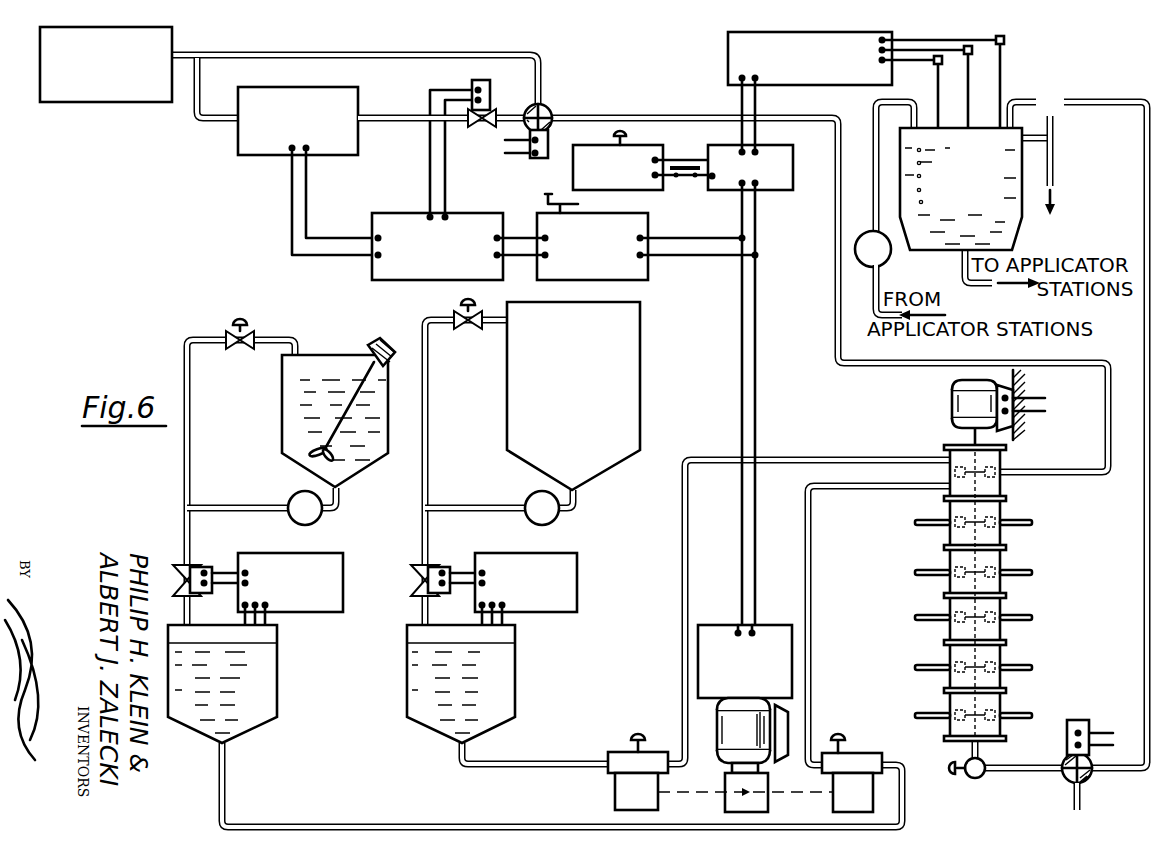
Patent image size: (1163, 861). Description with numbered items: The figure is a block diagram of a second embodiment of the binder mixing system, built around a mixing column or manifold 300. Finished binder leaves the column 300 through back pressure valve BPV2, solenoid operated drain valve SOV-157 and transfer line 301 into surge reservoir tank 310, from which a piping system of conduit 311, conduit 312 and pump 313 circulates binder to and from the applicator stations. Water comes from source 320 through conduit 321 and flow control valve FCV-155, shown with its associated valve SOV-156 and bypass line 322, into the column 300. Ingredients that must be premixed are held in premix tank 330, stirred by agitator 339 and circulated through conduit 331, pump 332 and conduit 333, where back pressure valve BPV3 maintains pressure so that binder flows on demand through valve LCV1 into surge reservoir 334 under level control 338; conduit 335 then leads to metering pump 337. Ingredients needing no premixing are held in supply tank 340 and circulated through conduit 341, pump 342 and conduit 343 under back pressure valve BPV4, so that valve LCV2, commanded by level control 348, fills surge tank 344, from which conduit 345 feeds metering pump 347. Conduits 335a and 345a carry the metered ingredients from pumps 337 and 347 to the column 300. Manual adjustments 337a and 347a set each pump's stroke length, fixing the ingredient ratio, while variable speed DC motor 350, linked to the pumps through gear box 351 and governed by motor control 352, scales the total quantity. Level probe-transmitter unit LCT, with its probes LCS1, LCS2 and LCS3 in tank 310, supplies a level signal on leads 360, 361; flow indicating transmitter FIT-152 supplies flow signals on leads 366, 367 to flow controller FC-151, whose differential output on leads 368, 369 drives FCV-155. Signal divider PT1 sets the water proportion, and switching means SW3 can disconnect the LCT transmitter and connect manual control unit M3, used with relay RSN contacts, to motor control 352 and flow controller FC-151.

The mixing column 300 is at (942, 440).
The transfer line 301 is at (1143, 500).
The surge reservoir tank 310 is at (1016, 228).
The conduit 311 is at (968, 282).
The conduit 312 is at (870, 294).
The pump 313 is at (889, 256).
The water source 320 is at (62, 106).
The conduit 321 is at (192, 106).
The water bypass line 322 is at (534, 54).
The premix tank 330 is at (280, 400).
The conduit 331 is at (342, 506).
The pump 332 is at (285, 500).
The conduit 333 is at (192, 440).
The surge reservoir 334 is at (278, 676).
The conduit 335 is at (584, 822).
The conduit 335a is at (824, 500).
The metering pump 337 is at (862, 754).
The manual adjustment 337a is at (850, 728).
The level control 338 is at (292, 614).
The agitator 339 is at (372, 342).
The supply tank 340 is at (506, 370).
The conduit 341 is at (577, 506).
The pump 342 is at (523, 500).
The conduit 343 is at (430, 424).
The surge tank 344 is at (518, 670).
The conduit 345 is at (568, 770).
The conduit 345a is at (778, 458).
The metering pump 347 is at (620, 752).
The manual adjustment 347a is at (642, 728).
The level control 348 is at (530, 614).
The variable speed DC motor 350 is at (760, 710).
The gear box 351 is at (762, 812).
The motor control 352 is at (775, 625).
The lead 360 is at (738, 100).
The lead 361 is at (758, 102).
The lead 366 is at (304, 185).
The lead 367 is at (290, 165).
The lead 368 is at (428, 130).
The lead 369 is at (445, 155).
The flow indicating transmitter FIT-152 is at (236, 140).
The flow controller FC-151 is at (398, 212).
The flow control valve FCV-155 is at (478, 82).
The solenoid valve SOV-156 is at (540, 160).
The solenoid operated drain valve SOV-157 is at (1065, 790).
The signal divider PT1 is at (650, 226).
The manual control unit M3 is at (636, 144).
The latch-trip relay RSN is at (685, 181).
The switching means SW3 is at (768, 190).
The level probe-transmitter unit LCT is at (726, 42).
The level sensor probe LCS1 is at (936, 108).
The level sensor probe LCS2 is at (937, 124).
The level sensor probe LCS3 is at (943, 124).
The back pressure valve BPV2 is at (960, 772).
The back pressure valve BPV3 is at (240, 318).
The back pressure valve BPV4 is at (466, 300).
The level control valve LCV1 is at (198, 562).
The level control valve LCV2 is at (436, 562).